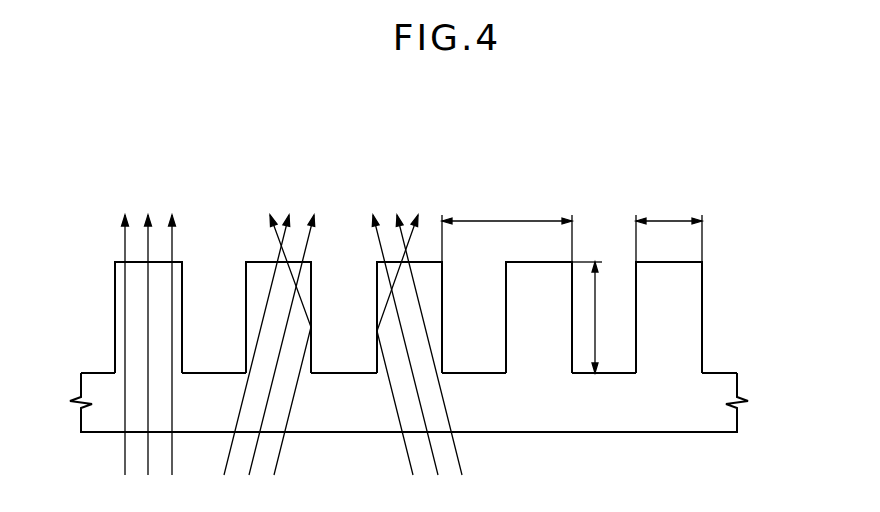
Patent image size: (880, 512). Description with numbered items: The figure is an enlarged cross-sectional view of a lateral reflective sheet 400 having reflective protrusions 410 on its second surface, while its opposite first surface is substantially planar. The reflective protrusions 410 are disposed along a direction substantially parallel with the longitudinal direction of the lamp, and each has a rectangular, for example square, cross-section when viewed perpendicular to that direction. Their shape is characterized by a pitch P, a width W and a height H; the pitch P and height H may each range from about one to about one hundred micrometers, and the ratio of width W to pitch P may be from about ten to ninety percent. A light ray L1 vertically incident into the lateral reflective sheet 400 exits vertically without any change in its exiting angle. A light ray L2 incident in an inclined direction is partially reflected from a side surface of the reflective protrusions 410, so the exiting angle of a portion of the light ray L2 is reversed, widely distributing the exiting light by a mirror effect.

The lateral reflective sheet 400 is at (725, 389).
The reflective protrusions 410 is at (692, 305).
The light ray L1 is at (149, 332).
The light ray L2 is at (343, 332).
The pitch P is at (507, 229).
The width W is at (669, 229).
The height H is at (592, 317).